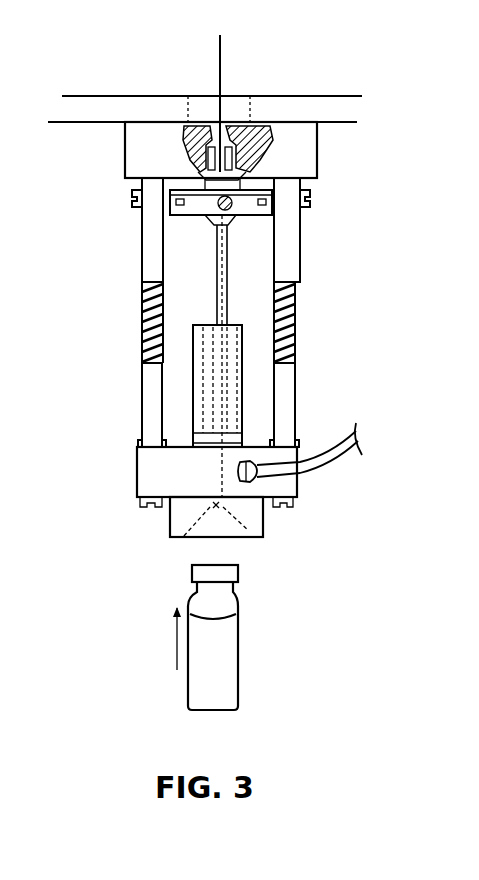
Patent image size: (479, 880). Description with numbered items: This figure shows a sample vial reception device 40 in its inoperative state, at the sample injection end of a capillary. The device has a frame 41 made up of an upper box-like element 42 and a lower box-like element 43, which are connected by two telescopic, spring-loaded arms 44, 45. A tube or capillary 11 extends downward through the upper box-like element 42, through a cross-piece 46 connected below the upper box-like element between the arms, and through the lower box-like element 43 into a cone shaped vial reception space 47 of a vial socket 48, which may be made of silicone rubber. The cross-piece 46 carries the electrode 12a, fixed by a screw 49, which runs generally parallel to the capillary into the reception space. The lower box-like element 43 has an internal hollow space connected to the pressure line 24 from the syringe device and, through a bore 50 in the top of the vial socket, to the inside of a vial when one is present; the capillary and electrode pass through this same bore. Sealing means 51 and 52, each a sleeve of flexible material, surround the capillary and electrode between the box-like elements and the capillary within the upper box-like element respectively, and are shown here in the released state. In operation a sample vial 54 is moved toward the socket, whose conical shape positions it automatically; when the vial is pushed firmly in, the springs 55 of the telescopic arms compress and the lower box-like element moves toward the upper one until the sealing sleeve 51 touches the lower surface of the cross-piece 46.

The capillary 11 is at (222, 55).
The electrode 12a is at (232, 278).
The pressure line 24 is at (337, 453).
The sample vial reception device 40 is at (122, 242).
The frame 41 is at (327, 156).
The upper box-like element 42 is at (138, 146).
The lower box-like element 43 is at (147, 471).
The telescopic spring-loaded arm 44 is at (303, 383).
The telescopic spring-loaded arm 45 is at (142, 406).
The cross-piece 46 is at (188, 207).
The cone shaped vial reception space 47 is at (200, 532).
The vial socket 48 is at (172, 526).
The screw 49 is at (231, 199).
The bore 50 is at (227, 502).
The sealing means 51 is at (198, 378).
The sealing means 52 is at (190, 163).
The sample vial 54 is at (233, 648).
The springs 55 is at (145, 318).